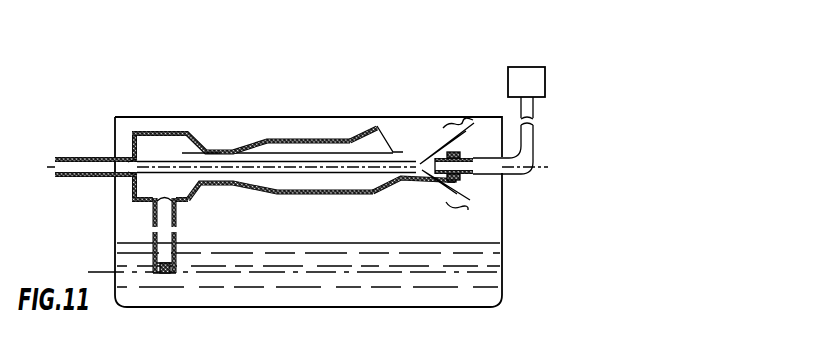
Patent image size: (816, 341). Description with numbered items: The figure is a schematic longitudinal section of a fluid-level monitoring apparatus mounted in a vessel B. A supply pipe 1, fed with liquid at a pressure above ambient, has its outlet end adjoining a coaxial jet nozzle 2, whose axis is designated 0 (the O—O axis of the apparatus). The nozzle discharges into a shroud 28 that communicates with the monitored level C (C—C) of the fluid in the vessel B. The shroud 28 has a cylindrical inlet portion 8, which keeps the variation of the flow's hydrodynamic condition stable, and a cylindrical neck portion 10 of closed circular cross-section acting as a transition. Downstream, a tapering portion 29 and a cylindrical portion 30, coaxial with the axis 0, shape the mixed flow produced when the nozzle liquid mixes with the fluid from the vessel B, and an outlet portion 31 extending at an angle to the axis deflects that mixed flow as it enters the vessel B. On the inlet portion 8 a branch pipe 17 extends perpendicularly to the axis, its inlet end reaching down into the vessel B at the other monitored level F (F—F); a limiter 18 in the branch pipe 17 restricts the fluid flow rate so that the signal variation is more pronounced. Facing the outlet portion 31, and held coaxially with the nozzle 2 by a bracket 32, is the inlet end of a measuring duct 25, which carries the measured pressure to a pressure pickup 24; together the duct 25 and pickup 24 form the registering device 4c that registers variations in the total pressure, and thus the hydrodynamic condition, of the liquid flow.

The supply pipe 1 is at (70, 156).
The jet nozzle 2 is at (130, 158).
The registering device 4c is at (526, 62).
The inlet portion 8 is at (203, 190).
The neck portion 10 is at (226, 183).
The branch pipe 17 is at (153, 213).
The limiter 18 is at (178, 257).
The pressure pickup 24 is at (507, 88).
The measuring duct 25 is at (477, 158).
The shroud 28 is at (266, 137).
The tapering portion 29 is at (238, 143).
The cylindrical portion 30 is at (367, 195).
The outlet portion 31 is at (360, 132).
The bracket 32 is at (423, 188).
The longitudinal axis O—O 0 is at (297, 167).
The vessel B is at (509, 270).
The monitored level C— C is at (292, 150).
The monitored level F— F is at (286, 268).